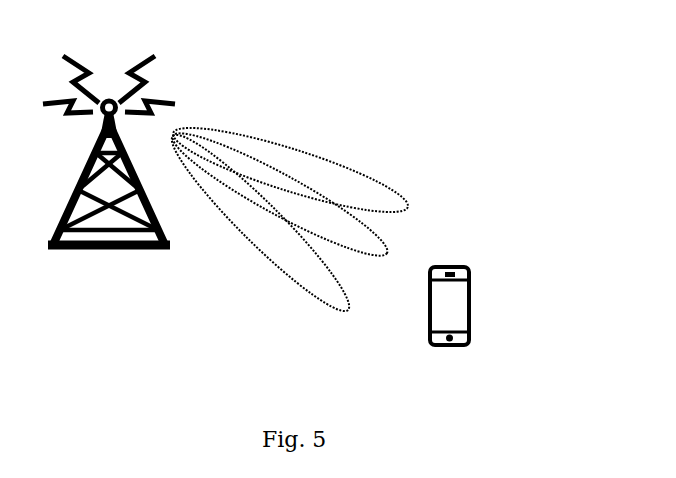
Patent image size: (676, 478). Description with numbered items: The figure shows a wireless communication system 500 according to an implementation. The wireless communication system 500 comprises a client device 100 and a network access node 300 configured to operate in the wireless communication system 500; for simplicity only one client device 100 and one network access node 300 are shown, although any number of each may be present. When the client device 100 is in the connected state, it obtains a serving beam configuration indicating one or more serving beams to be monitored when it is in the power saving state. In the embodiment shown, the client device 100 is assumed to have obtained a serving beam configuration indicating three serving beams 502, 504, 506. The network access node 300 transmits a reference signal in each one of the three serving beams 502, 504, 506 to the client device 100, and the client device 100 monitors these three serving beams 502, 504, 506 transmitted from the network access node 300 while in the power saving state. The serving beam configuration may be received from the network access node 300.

The client device 100 is at (447, 347).
The network access node 300 is at (85, 249).
The wireless communication system 500 is at (438, 114).
The serving beam 502 is at (313, 153).
The serving beam 504 is at (375, 237).
The serving beam 506 is at (258, 258).